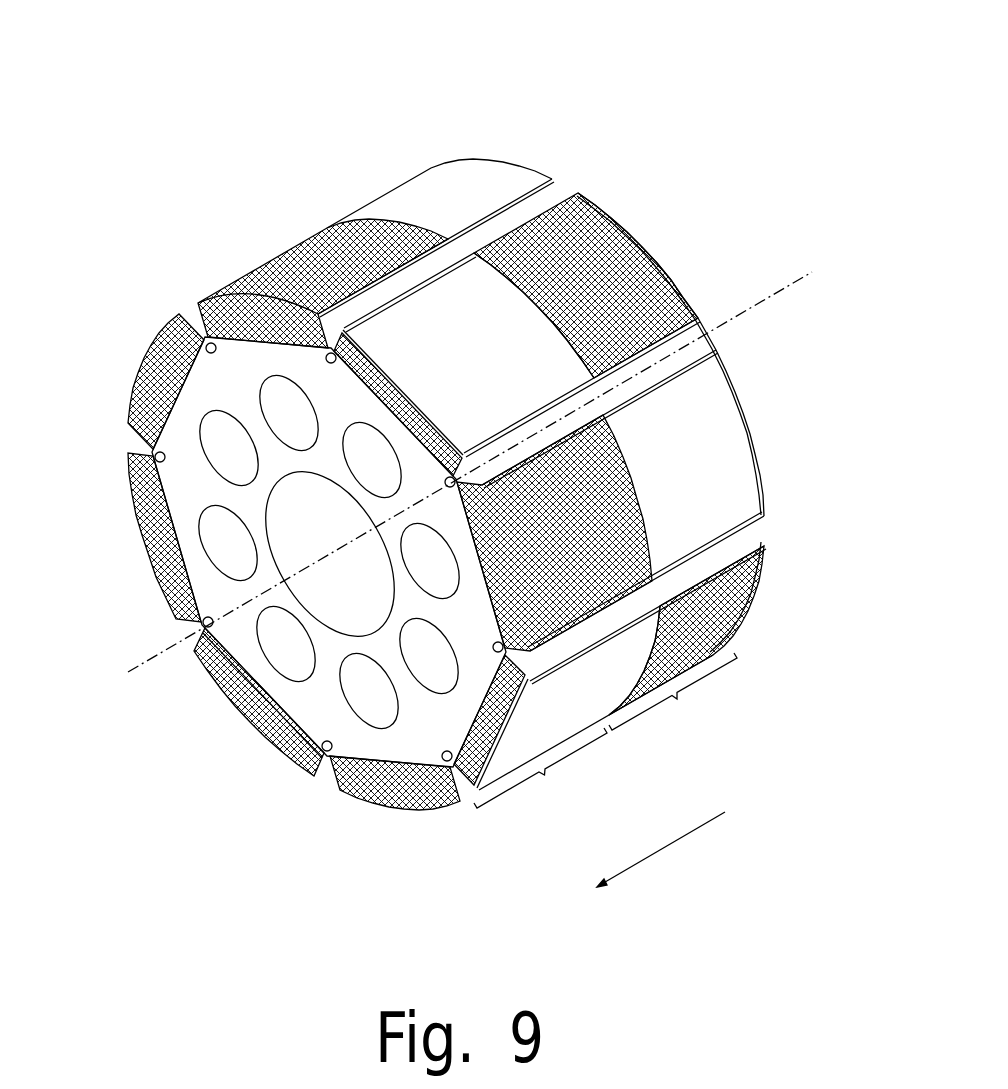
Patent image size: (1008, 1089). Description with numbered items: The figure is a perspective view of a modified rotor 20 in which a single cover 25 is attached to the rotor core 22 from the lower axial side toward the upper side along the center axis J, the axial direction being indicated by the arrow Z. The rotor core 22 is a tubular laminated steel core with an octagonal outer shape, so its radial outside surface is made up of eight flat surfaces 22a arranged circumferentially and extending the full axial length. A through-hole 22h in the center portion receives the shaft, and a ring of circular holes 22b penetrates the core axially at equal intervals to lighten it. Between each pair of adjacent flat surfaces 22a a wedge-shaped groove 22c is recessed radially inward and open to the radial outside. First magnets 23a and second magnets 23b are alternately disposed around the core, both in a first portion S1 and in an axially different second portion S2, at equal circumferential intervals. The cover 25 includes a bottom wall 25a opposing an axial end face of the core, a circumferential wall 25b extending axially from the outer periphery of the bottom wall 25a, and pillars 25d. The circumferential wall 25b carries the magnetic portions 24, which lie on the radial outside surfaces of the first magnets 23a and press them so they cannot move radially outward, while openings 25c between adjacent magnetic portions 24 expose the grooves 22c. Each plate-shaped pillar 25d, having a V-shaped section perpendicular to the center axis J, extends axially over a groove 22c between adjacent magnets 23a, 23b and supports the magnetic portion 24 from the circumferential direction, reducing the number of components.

The rotor 20 is at (462, 462).
The rotor core 22 is at (277, 614).
The flat surface 22a is at (243, 717).
The hole 22b is at (253, 657).
The groove 22c is at (133, 478).
The through-hole 22h is at (350, 597).
The first magnet 23a is at (457, 315).
The second magnet 23b is at (265, 322).
The magnetic portion 24 is at (357, 247).
The cover 25 is at (670, 491).
The bottom wall 25a is at (753, 603).
The circumferential wall 25b is at (697, 480).
The opening 25c is at (670, 278).
The pillar 25d is at (648, 378).
The center axis J is at (760, 302).
The first portion S1 is at (540, 771).
The second portion S2 is at (673, 696).
The axial direction Z is at (649, 863).